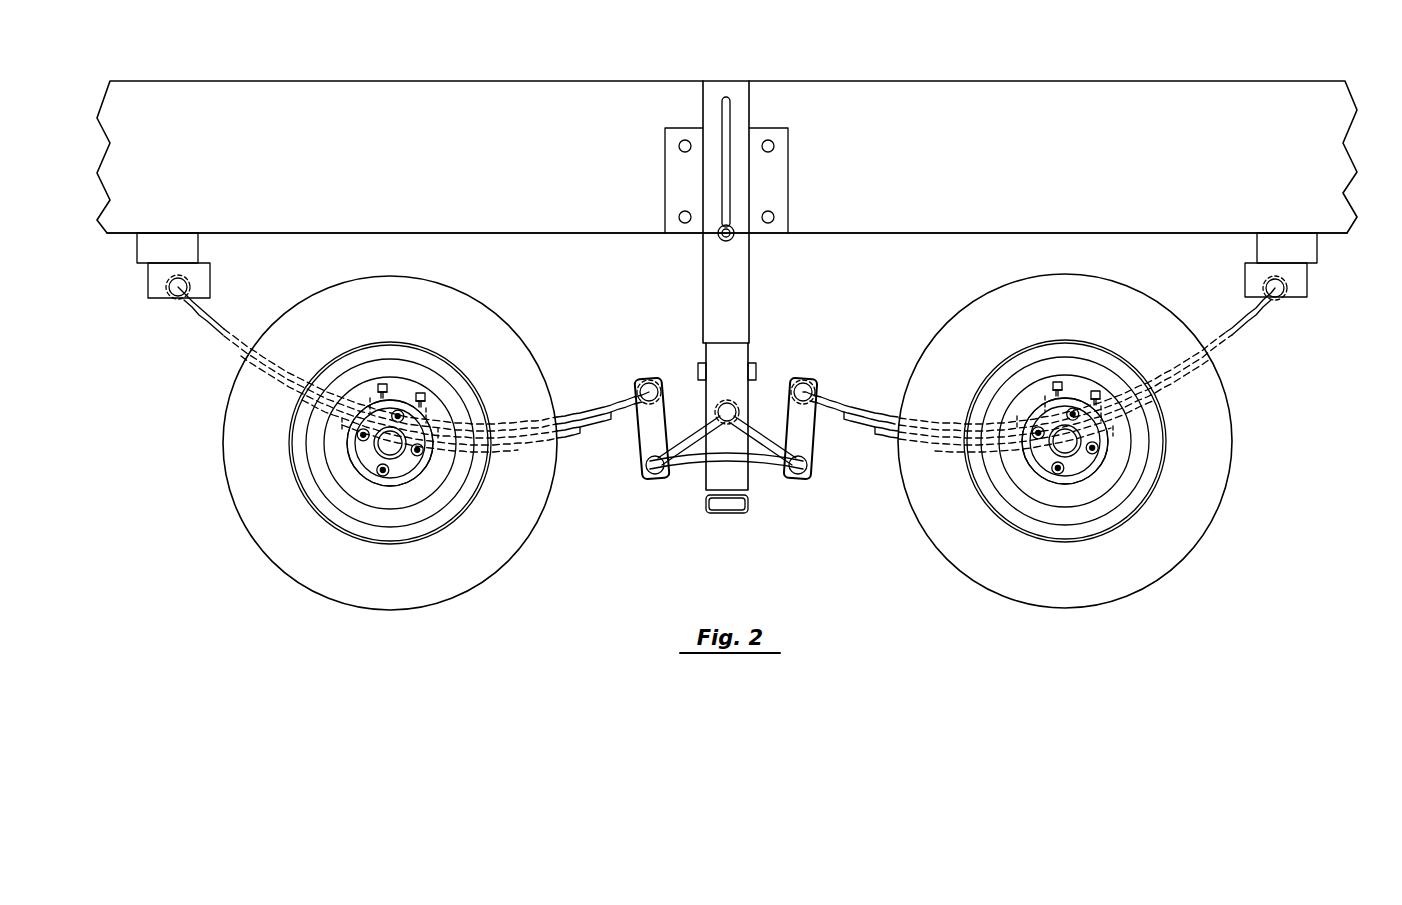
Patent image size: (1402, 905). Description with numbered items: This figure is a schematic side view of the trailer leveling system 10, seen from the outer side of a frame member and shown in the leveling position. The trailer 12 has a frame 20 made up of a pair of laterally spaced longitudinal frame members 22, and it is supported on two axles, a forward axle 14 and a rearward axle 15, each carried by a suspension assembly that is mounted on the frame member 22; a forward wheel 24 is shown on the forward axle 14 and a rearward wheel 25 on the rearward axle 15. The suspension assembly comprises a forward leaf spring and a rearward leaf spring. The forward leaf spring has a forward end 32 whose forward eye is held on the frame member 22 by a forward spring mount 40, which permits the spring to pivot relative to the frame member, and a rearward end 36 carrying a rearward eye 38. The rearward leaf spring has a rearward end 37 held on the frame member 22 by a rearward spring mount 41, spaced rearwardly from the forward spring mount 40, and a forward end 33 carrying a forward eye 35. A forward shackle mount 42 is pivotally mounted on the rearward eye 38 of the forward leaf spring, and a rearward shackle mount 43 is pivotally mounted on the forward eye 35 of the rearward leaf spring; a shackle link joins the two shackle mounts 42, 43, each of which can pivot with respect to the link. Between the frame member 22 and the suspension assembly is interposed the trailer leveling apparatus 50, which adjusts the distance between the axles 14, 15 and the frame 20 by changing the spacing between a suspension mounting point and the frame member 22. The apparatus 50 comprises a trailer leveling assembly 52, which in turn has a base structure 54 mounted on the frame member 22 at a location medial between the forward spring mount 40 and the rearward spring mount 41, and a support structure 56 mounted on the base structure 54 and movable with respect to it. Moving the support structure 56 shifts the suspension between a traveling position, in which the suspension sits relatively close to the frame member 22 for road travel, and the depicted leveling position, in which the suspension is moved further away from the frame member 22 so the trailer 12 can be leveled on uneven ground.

The trailer leveling system 10 is at (629, 507).
The trailer 12 is at (612, 65).
The forward axle 14 is at (1067, 440).
The rearward axle 15 is at (388, 445).
The frame 20 is at (698, 63).
The frame member 22 is at (577, 233).
The front wheel 24 is at (1178, 523).
The rear wheel 25 is at (268, 537).
The forward end of the forward leaf spring 32 is at (1235, 325).
The forward end of the rearward leaf spring 33 is at (597, 418).
The forward eye of the rearward leaf spring 35 is at (637, 380).
The rearward end of the forward leaf spring 36 is at (863, 420).
The rearward end of the rearward leaf spring 37 is at (235, 318).
The rearward eye of the forward leaf spring 38 is at (808, 373).
The forward spring mount 40 is at (1300, 288).
The rearward spring mount 41 is at (160, 285).
The forward shackle mount 42 is at (807, 438).
The rearward shackle mount 43 is at (650, 437).
The trailer leveling apparatus 50 is at (724, 300).
The trailer leveling assembly 52 is at (693, 273).
The base structure 54 is at (732, 252).
The support structure 56 is at (715, 477).